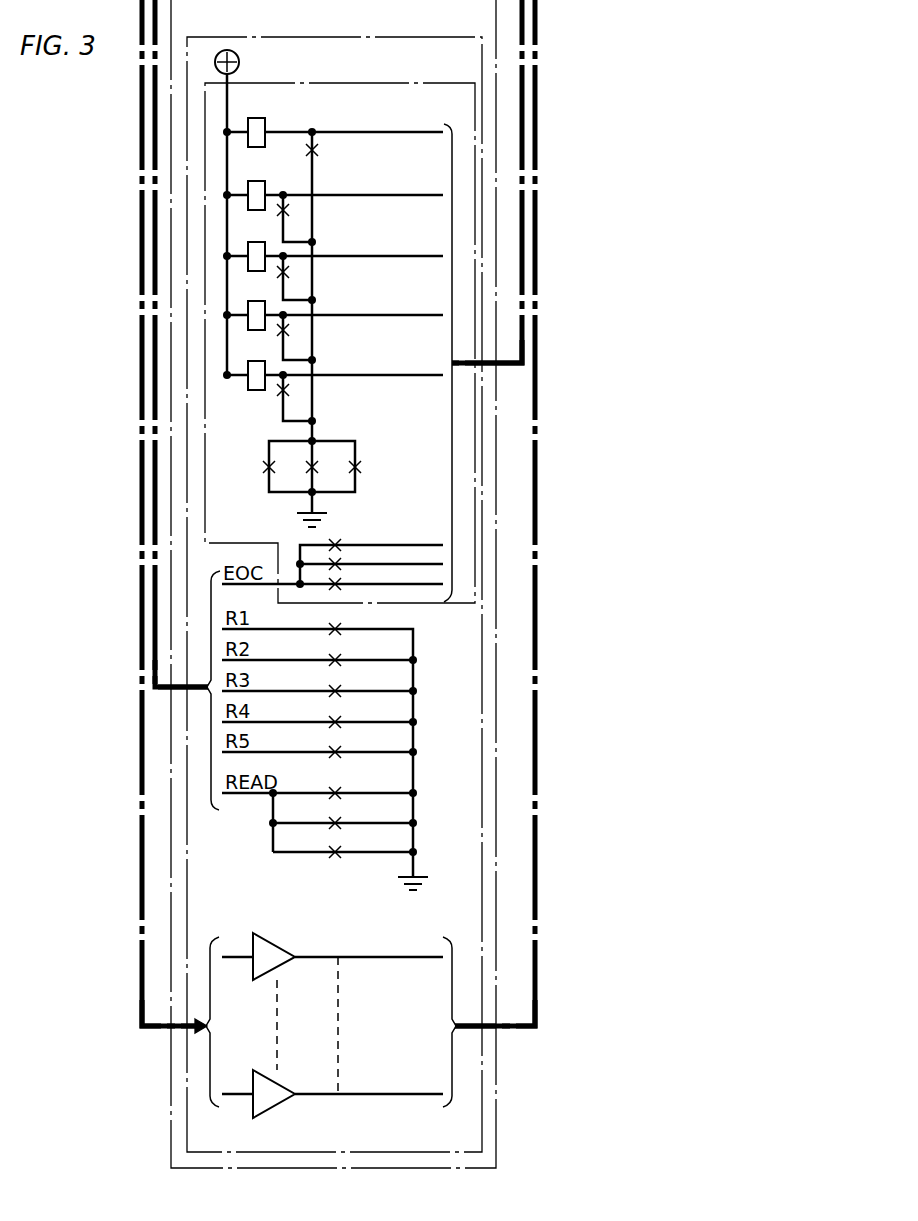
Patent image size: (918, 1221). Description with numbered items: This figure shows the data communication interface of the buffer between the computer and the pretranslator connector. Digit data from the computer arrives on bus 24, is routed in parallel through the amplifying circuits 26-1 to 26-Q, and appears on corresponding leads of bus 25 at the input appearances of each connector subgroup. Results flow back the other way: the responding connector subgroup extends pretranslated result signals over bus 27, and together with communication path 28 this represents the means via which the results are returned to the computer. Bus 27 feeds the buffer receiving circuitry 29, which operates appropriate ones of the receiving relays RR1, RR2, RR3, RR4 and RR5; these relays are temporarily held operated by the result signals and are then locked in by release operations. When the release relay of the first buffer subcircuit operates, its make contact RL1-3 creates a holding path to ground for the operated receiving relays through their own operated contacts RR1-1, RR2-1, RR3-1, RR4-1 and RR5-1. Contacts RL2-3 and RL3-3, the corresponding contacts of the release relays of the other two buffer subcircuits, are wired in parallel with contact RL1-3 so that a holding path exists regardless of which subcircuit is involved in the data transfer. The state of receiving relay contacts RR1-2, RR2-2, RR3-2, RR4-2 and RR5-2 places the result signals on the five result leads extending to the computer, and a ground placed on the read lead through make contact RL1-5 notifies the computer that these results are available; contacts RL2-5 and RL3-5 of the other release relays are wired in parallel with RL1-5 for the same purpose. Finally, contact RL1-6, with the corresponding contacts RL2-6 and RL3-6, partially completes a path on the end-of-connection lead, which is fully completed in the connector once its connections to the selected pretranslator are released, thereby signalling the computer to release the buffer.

The bus 24 is at (142, 243).
The bus 25 is at (535, 236).
The bus 27 is at (522, 210).
The communication path 28 is at (155, 267).
The buffer receiving circuitry 29 is at (368, 97).
The amplifying circuit 26-1 is at (276, 945).
The amplifying circuit 26-Q is at (278, 1085).
The receiving relay RR1 is at (253, 122).
The receiving relay RR2 is at (253, 185).
The receiving relay RR3 is at (253, 246).
The receiving relay RR4 is at (253, 305).
The receiving relay RR5 is at (253, 365).
The receiving relay contact RR1-1 is at (320, 152).
The receiving relay contact RR2-1 is at (291, 211).
The receiving relay contact RR3-1 is at (291, 272).
The receiving relay contact RR4-1 is at (291, 330).
The receiving relay contact RR5-1 is at (291, 390).
The receiving relay contact RR1-2 is at (337, 626).
The receiving relay contact RR2-2 is at (337, 657).
The receiving relay contact RR3-2 is at (337, 688).
The receiving relay contact RR4-2 is at (337, 719).
The receiving relay contact RR5-2 is at (337, 749).
The release relay make contact RL1-3 is at (242, 468).
The release relay contact RL2-3 is at (306, 462).
The release relay contact RL3-3 is at (359, 466).
The release relay make contact RL1-5 is at (337, 790).
The release relay contact RL2-5 is at (337, 820).
The release relay contact RL3-5 is at (337, 849).
The release relay contact RL1-6 is at (338, 582).
The release relay contact RL2-6 is at (338, 562).
The release relay contact RL3-6 is at (338, 543).